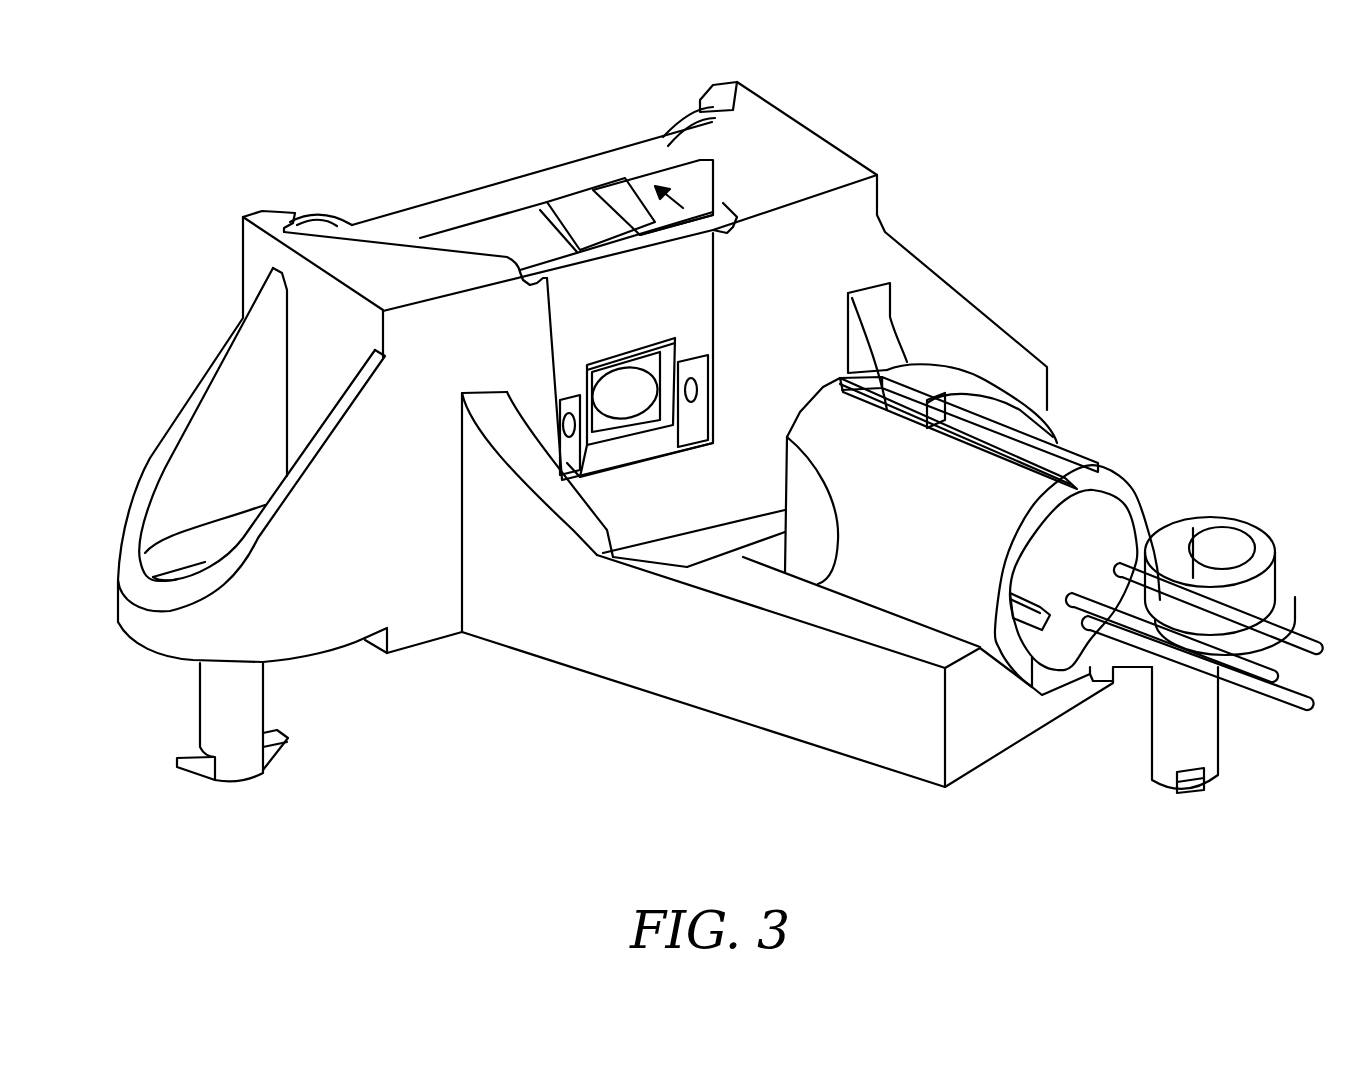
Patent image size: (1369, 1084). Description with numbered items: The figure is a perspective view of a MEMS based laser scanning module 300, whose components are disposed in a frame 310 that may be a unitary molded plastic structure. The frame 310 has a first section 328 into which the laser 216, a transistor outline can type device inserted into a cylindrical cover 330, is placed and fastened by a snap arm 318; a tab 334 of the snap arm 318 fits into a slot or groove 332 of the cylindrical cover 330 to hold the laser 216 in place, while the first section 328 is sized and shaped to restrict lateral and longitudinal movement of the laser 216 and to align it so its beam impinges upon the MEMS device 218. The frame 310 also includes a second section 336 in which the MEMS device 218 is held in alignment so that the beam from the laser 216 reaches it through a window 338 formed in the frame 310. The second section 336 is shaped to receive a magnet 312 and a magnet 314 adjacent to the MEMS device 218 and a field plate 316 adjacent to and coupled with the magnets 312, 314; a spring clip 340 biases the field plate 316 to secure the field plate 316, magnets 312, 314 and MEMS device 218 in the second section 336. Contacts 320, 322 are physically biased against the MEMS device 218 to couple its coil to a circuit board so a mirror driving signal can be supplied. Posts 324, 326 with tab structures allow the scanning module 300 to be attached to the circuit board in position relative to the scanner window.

The scanning module 300 is at (1219, 151).
The frame 310 is at (808, 131).
The magnet 312 is at (460, 236).
The magnet 314 is at (605, 192).
The field plate 316 is at (520, 188).
The snap arm 318 is at (970, 377).
The contact 320 is at (567, 457).
The contact 322 is at (693, 427).
The post 324 is at (248, 773).
The post 326 is at (1173, 798).
The first section 328 is at (1053, 684).
The cylindrical cover 330 is at (1093, 461).
The slot or groove 332 is at (1017, 430).
The tab 334 is at (940, 425).
The second section 336 is at (677, 132).
The window 338 is at (590, 358).
The spring clip 340 is at (322, 220).
The laser 216 is at (1118, 481).
The MEMS device 218 is at (637, 387).